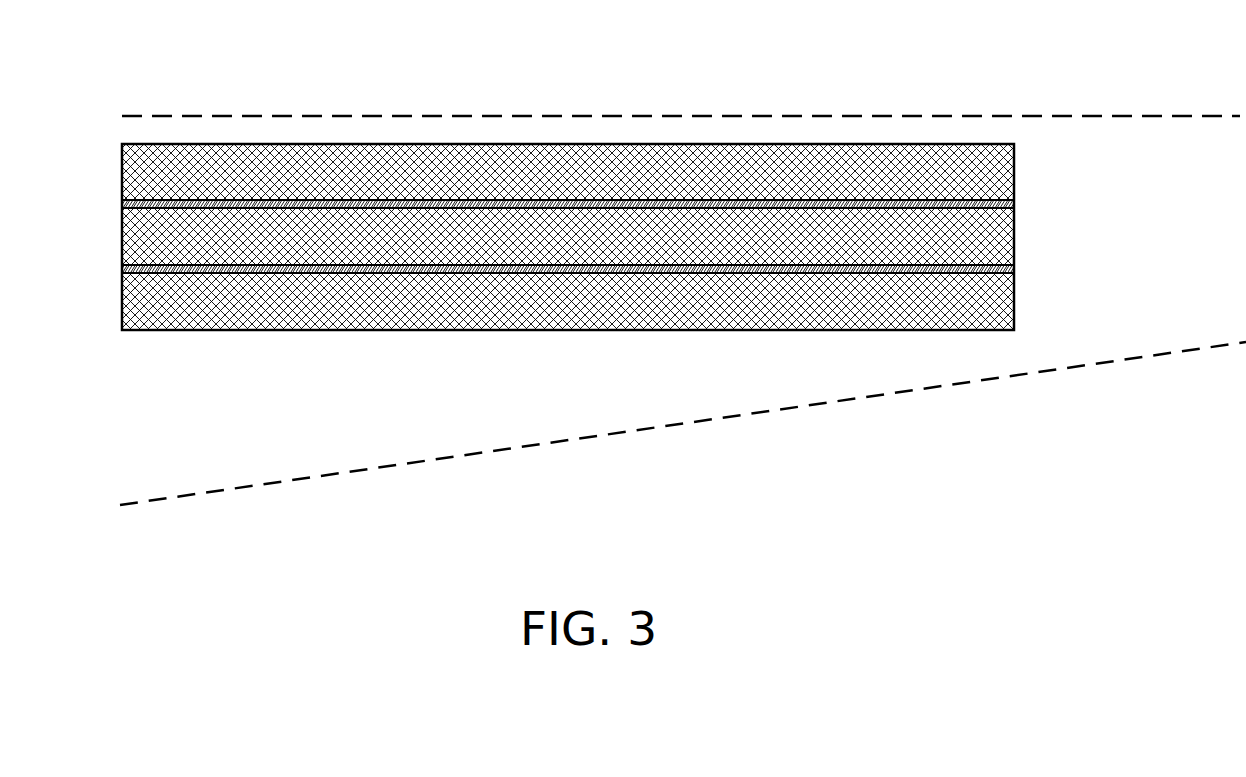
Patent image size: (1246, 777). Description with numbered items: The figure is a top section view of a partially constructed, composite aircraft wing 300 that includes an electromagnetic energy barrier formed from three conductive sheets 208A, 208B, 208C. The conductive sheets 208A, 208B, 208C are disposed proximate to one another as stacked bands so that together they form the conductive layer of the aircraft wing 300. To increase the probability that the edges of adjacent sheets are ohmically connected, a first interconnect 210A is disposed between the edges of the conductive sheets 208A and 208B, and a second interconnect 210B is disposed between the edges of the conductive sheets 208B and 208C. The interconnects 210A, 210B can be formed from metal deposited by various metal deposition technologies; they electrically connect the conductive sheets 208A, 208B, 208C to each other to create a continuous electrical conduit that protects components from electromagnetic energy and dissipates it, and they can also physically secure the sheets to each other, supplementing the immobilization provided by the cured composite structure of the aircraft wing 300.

The aircraft wing 300 is at (272, 114).
The conductive sheet 208A is at (1014, 169).
The conductive sheet 208B is at (1014, 235).
The conductive sheet 208C is at (1014, 298).
The interconnect 210A is at (122, 203).
The interconnect 210B is at (122, 268).